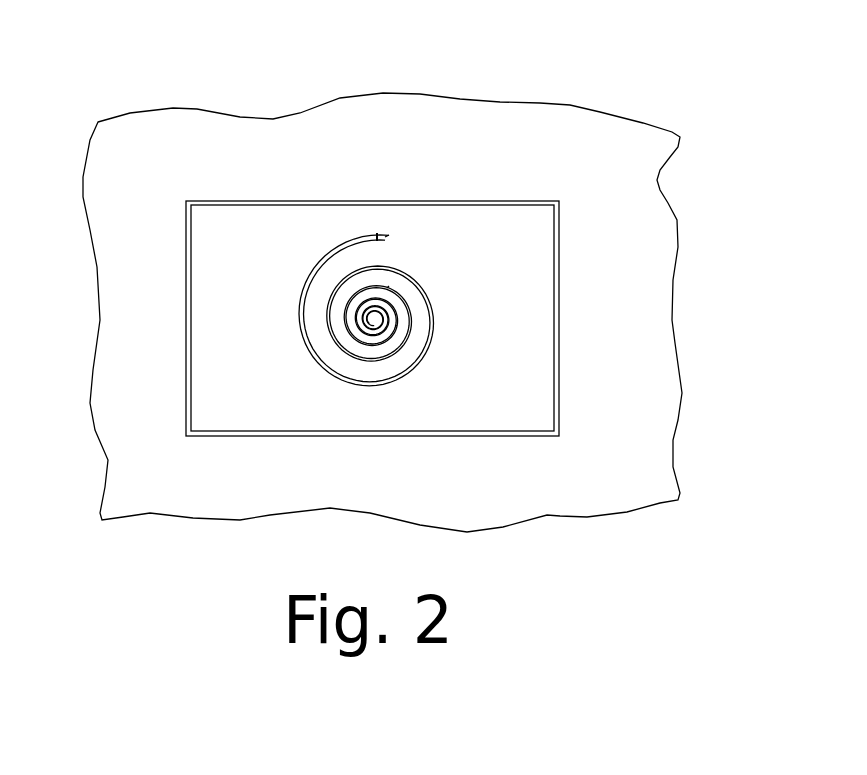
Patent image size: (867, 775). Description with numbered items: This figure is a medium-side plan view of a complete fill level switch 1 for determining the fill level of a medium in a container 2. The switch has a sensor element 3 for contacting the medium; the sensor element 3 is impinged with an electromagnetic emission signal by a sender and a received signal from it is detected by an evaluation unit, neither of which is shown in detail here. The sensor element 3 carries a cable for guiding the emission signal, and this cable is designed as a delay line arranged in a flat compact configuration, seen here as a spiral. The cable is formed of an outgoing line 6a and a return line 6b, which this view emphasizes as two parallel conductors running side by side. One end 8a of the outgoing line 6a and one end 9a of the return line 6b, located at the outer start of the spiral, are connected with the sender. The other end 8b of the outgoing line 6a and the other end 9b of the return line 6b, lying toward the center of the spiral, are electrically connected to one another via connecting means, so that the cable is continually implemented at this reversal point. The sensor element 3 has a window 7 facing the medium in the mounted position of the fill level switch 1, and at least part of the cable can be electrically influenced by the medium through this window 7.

The fill level switch 1 is at (416, 335).
The container 2 is at (630, 182).
The sensor element 3 is at (505, 262).
The outgoing line 6a is at (357, 236).
The return line 6b is at (338, 238).
The window 7 is at (510, 254).
The one end of the outgoing line 8a is at (378, 236).
The other end of the outgoing line 8b is at (387, 288).
The one end of the return line 9a is at (385, 237).
The other end of the return line 9b is at (395, 325).